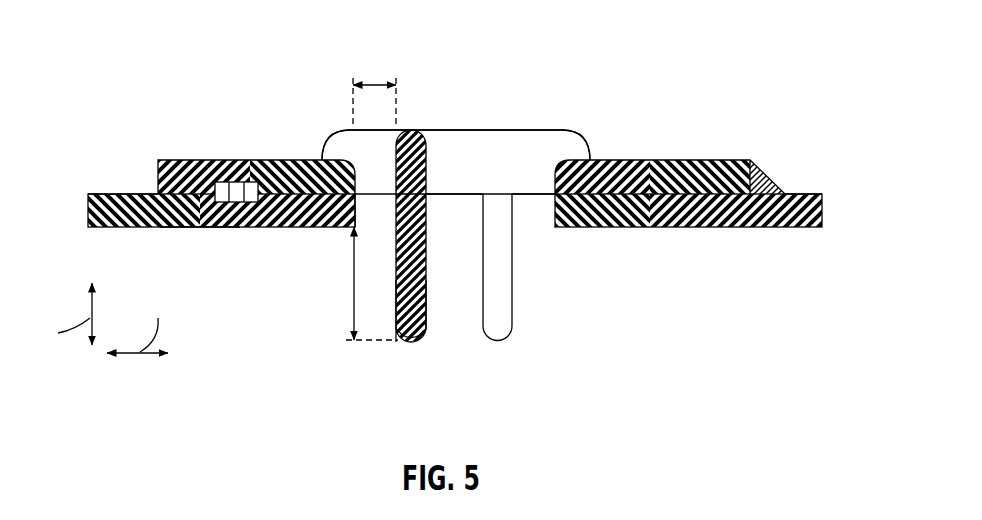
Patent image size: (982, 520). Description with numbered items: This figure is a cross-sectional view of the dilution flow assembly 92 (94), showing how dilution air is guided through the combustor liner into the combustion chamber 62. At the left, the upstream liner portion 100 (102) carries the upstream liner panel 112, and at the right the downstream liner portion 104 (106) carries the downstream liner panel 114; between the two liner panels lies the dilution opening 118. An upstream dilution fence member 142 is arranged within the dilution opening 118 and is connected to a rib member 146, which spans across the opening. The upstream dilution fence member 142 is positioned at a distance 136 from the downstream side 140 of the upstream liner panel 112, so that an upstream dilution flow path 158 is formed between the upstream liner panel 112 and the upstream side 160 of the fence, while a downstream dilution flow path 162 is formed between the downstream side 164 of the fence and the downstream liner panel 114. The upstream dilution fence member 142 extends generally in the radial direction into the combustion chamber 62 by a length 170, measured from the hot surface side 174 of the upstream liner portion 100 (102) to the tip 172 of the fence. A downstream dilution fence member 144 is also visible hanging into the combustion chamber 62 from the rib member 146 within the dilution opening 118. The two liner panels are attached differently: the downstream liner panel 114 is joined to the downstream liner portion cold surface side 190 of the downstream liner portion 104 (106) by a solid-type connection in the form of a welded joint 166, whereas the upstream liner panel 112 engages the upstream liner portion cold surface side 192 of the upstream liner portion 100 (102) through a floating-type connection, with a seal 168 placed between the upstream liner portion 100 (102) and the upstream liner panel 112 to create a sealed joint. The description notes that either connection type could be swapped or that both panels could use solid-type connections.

The combustion chamber 62 is at (248, 368).
The dilution flow assembly 92 is at (571, 108).
The dilution flow assembly 94 is at (714, 50).
The upstream liner portion 100 is at (194, 230).
The upstream liner portion 102 is at (170, 225).
The downstream liner portion 104 is at (700, 229).
The downstream liner portion 106 is at (710, 222).
The upstream liner panel 112 is at (180, 162).
The downstream liner panel 114 is at (655, 160).
The dilution opening 118 is at (537, 209).
The distance 136 is at (375, 84).
The downstream side of the upstream liner panel 140 is at (364, 217).
The upstream dilution fence member 142 is at (410, 130).
The downstream dilution fence member 144 is at (503, 273).
The rib member 146 is at (540, 128).
The upstream dilution flow path 158 is at (372, 264).
The upstream side of the upstream dilution fence member 160 is at (392, 306).
The downstream dilution flow path 162 is at (465, 264).
The downstream side of the upstream dilution fence member 164 is at (431, 308).
The welded joint 166 is at (760, 185).
The seal 168 is at (232, 190).
The length 170 is at (350, 288).
The tip 172 is at (414, 347).
The hot surface side of the upstream liner portion 174 is at (202, 229).
The downstream liner portion cold surface side 190 is at (812, 191).
The upstream liner portion cold surface side 192 is at (115, 191).